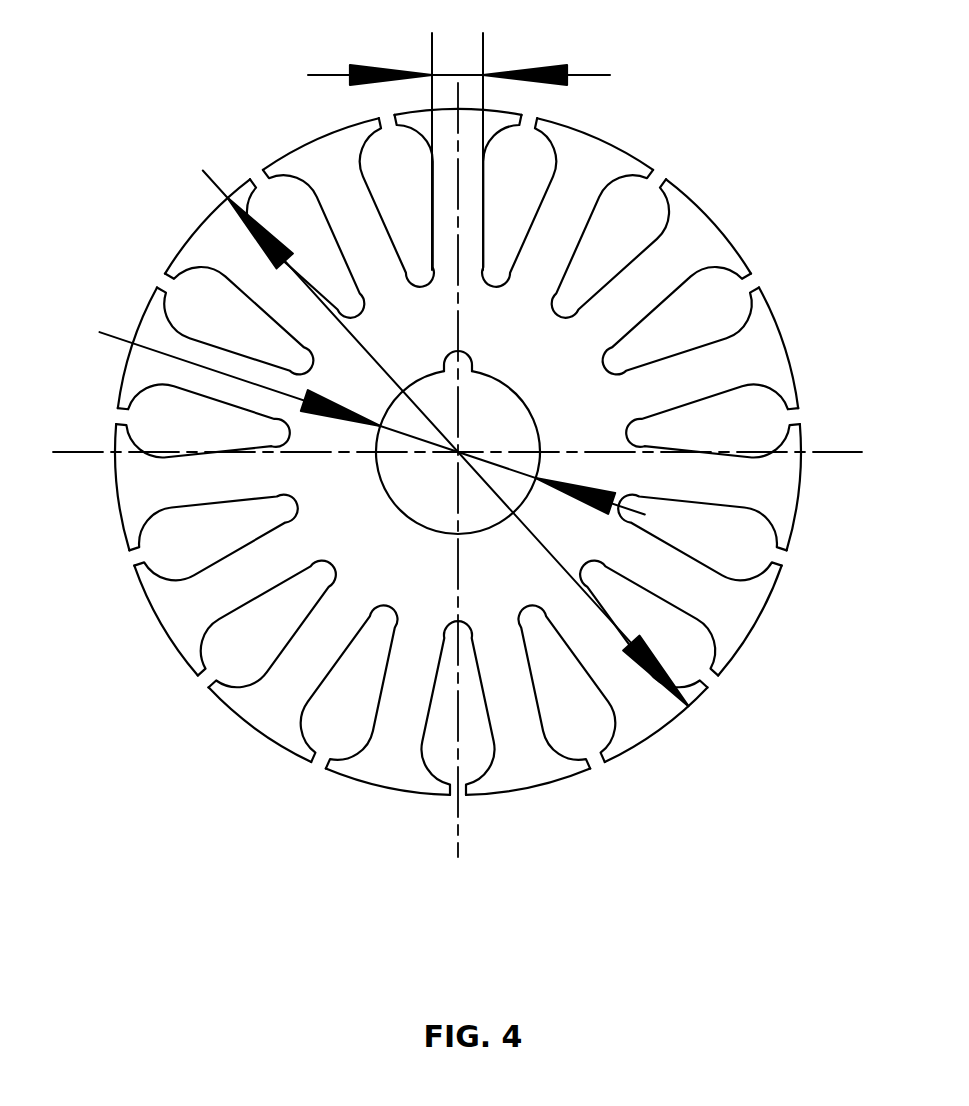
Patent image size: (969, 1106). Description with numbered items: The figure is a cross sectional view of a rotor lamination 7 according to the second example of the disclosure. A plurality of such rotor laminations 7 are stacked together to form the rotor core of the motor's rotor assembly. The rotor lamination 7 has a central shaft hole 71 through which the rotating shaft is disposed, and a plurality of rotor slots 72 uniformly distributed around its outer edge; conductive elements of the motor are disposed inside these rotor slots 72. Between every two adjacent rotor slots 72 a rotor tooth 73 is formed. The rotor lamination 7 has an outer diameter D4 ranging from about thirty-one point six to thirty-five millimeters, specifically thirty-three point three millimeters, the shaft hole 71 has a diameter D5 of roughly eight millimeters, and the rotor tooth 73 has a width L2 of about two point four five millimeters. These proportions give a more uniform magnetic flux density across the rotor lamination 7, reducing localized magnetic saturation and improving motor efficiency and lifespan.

The rotor lamination 7 is at (150, 662).
The shaft hole 71 is at (482, 412).
The rotor slot 72 is at (597, 257).
The rotor tooth 73 is at (635, 293).
The diameter of rotor lamination D4 is at (428, 417).
The diameter of shaft hole D5 is at (348, 416).
The width of rotor tooth L2 is at (459, 135).